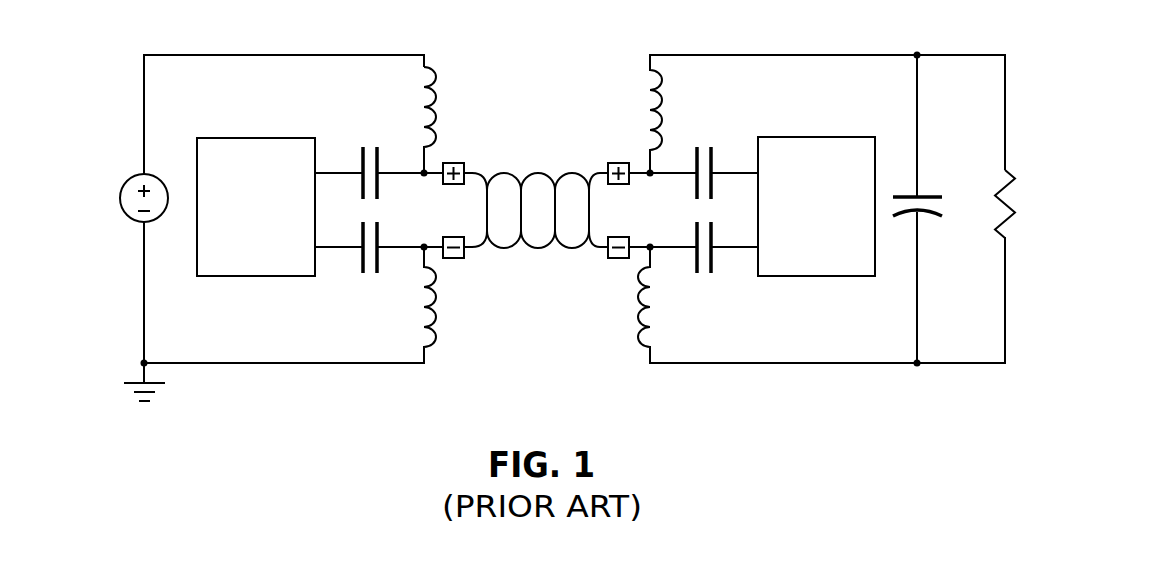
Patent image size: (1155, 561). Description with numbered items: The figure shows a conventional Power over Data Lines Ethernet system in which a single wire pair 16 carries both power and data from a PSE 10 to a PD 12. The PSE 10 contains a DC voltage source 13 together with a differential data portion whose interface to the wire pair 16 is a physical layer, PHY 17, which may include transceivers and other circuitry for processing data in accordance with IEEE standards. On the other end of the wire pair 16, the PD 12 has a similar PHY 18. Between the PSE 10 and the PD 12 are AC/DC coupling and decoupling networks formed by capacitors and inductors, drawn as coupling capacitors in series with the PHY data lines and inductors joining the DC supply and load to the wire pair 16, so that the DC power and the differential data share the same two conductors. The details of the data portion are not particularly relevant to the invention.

The PSE 10 is at (102, 116).
The PD 12 is at (590, 107).
The DC voltage source 13 is at (133, 223).
The wire pair 16 is at (547, 151).
The physical layer (PHY) 17 is at (271, 138).
The PHY 18 is at (800, 137).